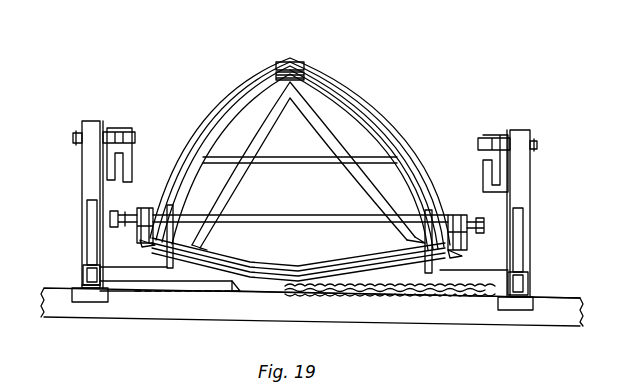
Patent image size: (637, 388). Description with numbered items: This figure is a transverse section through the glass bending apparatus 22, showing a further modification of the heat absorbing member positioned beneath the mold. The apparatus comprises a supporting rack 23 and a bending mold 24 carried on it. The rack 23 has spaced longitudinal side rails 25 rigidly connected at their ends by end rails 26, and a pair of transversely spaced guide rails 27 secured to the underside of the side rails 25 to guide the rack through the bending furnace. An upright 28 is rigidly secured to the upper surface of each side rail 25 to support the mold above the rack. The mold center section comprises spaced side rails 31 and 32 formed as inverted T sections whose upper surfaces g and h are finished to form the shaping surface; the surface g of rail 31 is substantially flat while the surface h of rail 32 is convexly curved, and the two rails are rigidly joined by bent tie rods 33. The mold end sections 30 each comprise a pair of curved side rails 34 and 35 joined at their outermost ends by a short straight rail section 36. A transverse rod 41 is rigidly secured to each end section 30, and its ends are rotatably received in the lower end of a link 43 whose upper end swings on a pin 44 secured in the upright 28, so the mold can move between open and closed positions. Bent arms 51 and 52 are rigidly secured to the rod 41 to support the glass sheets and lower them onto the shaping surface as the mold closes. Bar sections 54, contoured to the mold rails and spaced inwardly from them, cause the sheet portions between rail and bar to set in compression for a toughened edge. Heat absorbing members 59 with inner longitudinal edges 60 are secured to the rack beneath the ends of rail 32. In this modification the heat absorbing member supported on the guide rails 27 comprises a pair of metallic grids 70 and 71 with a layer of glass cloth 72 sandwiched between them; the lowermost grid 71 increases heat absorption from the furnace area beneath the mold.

The bending apparatus 22 is at (197, 98).
The supporting rack 23 is at (80, 283).
The bending mold 24 is at (192, 142).
The longitudinal side rails 25 is at (80, 275).
The end rails 26 is at (198, 272).
The guide rails 27 is at (80, 290).
The upright 28 is at (90, 188).
The mold end sections 30 is at (240, 86).
The side rail 31 is at (458, 254).
The side rail 32 is at (145, 244).
The bent tie rods 33 is at (300, 250).
The curved side rail 34 is at (352, 97).
The curved side rail 35 is at (218, 118).
The straight rail section 36 is at (295, 67).
The transverse rod 41 is at (315, 221).
The link 43 is at (113, 159).
The pin 44 is at (74, 134).
The bent arm 51 is at (170, 206).
The bent arm 52 is at (413, 222).
The bar sections 54 is at (347, 137).
The heat absorbing members 59 is at (146, 293).
The inner longitudinal edges 60 is at (236, 289).
The metallic grid 70 is at (488, 285).
The metallic grid 71 is at (393, 298).
The glass cloth 72 is at (438, 298).
The upper surface h is at (148, 211).
The upper surface g is at (453, 215).